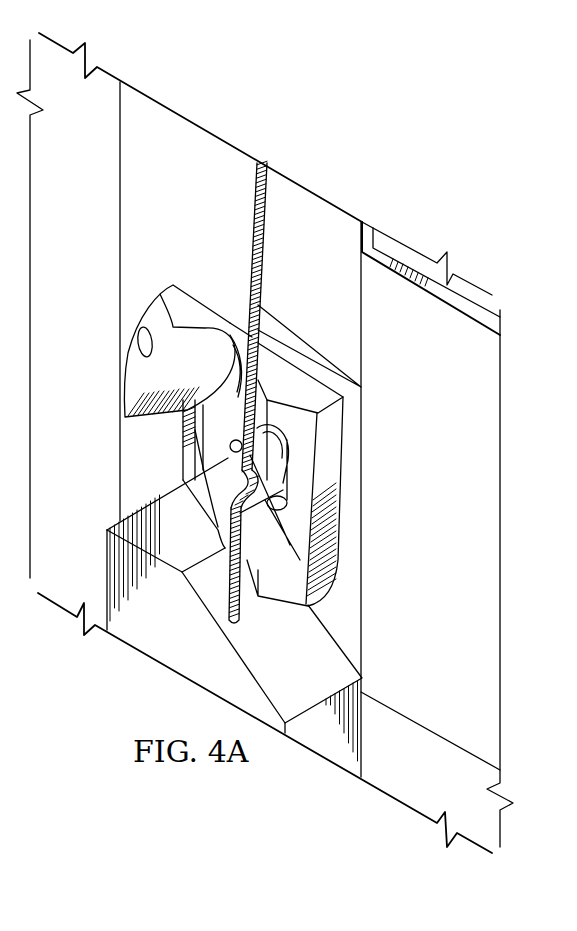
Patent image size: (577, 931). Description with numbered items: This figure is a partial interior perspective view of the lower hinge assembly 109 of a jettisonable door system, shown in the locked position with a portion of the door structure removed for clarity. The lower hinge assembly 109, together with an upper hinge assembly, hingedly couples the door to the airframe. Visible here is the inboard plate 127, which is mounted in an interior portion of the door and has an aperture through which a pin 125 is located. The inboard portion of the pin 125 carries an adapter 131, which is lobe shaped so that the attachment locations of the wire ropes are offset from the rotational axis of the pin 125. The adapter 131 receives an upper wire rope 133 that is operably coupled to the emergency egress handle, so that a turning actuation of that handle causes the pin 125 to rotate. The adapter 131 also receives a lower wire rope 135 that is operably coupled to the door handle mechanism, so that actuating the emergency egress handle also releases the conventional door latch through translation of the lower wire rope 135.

The lower hinge assembly 109 is at (127, 427).
The pin 125 is at (230, 450).
The inboard plate 127 is at (307, 387).
The adapter 131 is at (290, 484).
The upper wire rope 133 is at (253, 260).
The lower wire rope 135 is at (241, 614).